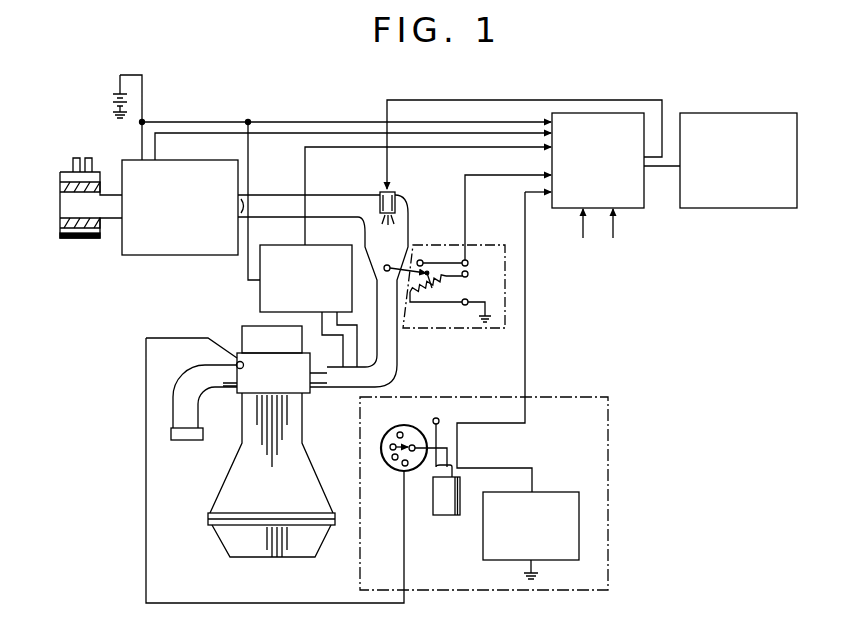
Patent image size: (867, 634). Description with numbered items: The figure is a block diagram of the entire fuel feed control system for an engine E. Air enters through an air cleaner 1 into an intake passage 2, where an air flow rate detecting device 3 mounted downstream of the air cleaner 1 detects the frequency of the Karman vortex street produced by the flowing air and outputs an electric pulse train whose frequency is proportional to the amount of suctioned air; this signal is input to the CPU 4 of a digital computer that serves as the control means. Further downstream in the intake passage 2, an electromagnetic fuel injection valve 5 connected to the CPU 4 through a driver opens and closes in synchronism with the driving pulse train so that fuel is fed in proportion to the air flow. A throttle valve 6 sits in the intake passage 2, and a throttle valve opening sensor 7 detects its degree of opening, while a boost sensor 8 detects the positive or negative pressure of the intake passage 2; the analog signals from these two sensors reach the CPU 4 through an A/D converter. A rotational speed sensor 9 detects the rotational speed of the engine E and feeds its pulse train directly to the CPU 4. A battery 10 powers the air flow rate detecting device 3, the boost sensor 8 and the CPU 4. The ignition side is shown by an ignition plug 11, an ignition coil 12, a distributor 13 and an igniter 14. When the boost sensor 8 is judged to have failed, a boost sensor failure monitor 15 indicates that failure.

The air cleaner 1 is at (60, 206).
The intake passage 2 is at (279, 205).
The air flow rate detecting device 3 is at (170, 257).
The central processing unit (CPU) 4 is at (631, 210).
The electromagnetic fuel injection valve 5 is at (395, 194).
The throttle valve 6 is at (388, 265).
The throttle valve opening sensor 7 is at (487, 244).
The boost sensor 8 is at (259, 305).
The rotational speed sensor 9 is at (611, 467).
The battery 10 is at (110, 99).
The ignition plug 11 is at (236, 363).
The ignition coil 12 is at (445, 516).
The distributor 13 is at (385, 440).
The igniter 14 is at (568, 492).
The boost sensor failure monitor 15 is at (693, 210).
The engine E is at (228, 478).